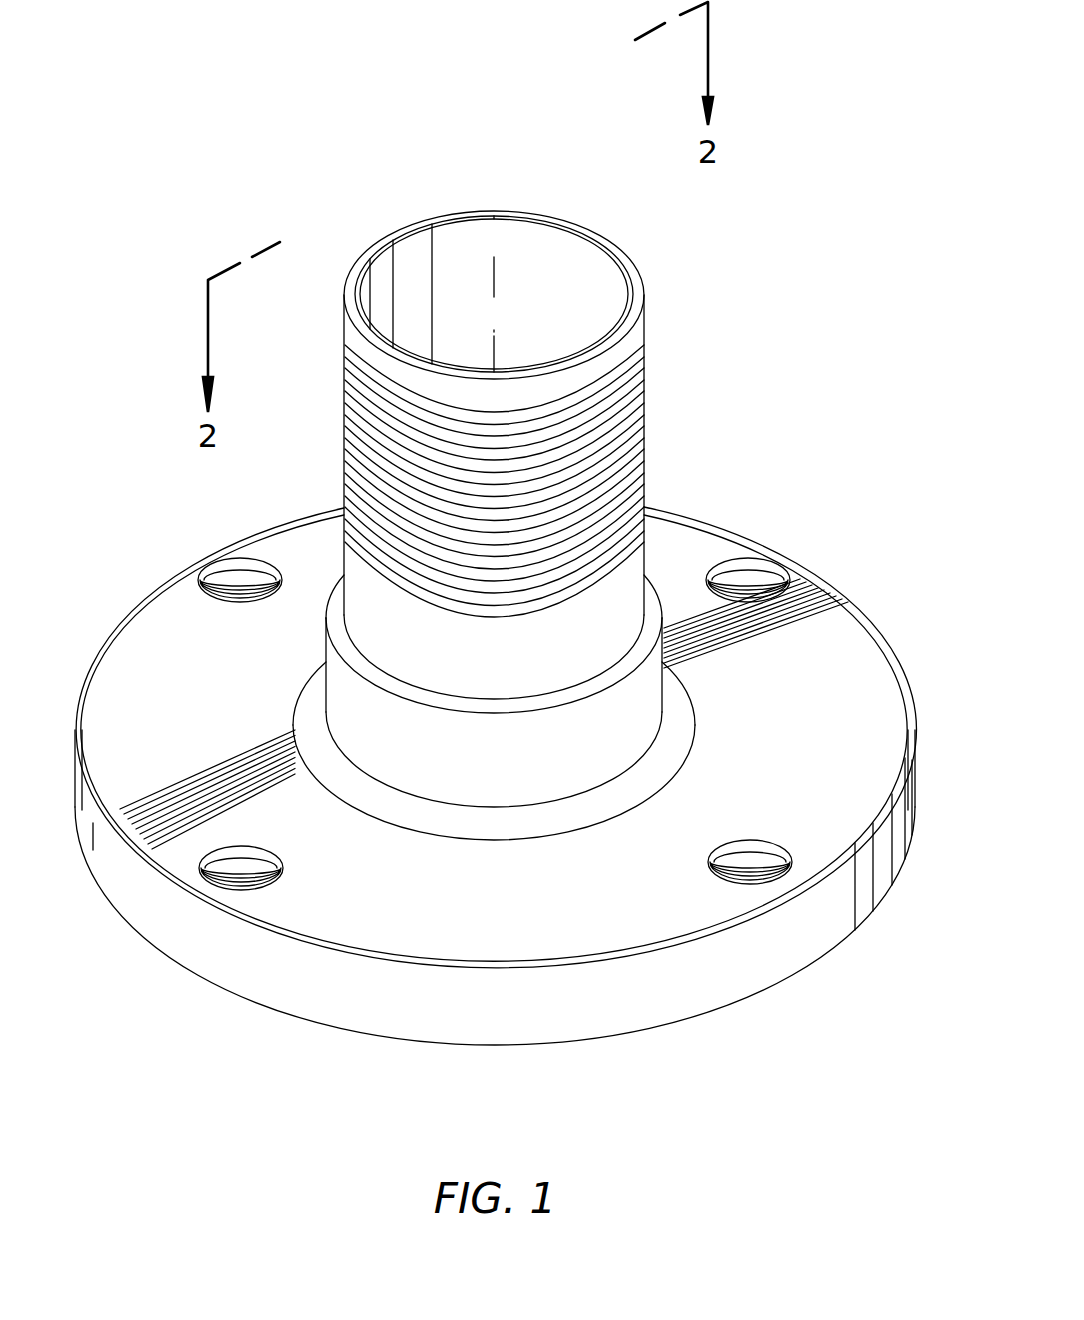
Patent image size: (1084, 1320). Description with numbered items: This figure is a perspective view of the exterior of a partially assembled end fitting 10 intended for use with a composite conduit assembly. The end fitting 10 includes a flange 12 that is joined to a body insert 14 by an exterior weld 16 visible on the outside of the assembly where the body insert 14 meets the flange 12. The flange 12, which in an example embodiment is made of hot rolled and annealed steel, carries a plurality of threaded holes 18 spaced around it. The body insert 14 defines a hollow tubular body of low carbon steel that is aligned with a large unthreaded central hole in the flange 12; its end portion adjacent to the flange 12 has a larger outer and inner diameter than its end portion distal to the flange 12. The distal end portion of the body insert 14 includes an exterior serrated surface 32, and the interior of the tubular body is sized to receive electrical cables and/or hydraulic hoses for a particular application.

The end fitting 10 is at (742, 370).
The flange 12 is at (500, 1025).
The body insert 14 is at (617, 608).
The exterior weld 16 is at (300, 725).
The threaded holes 18 is at (242, 582).
The exterior serrated surface 32 is at (648, 460).